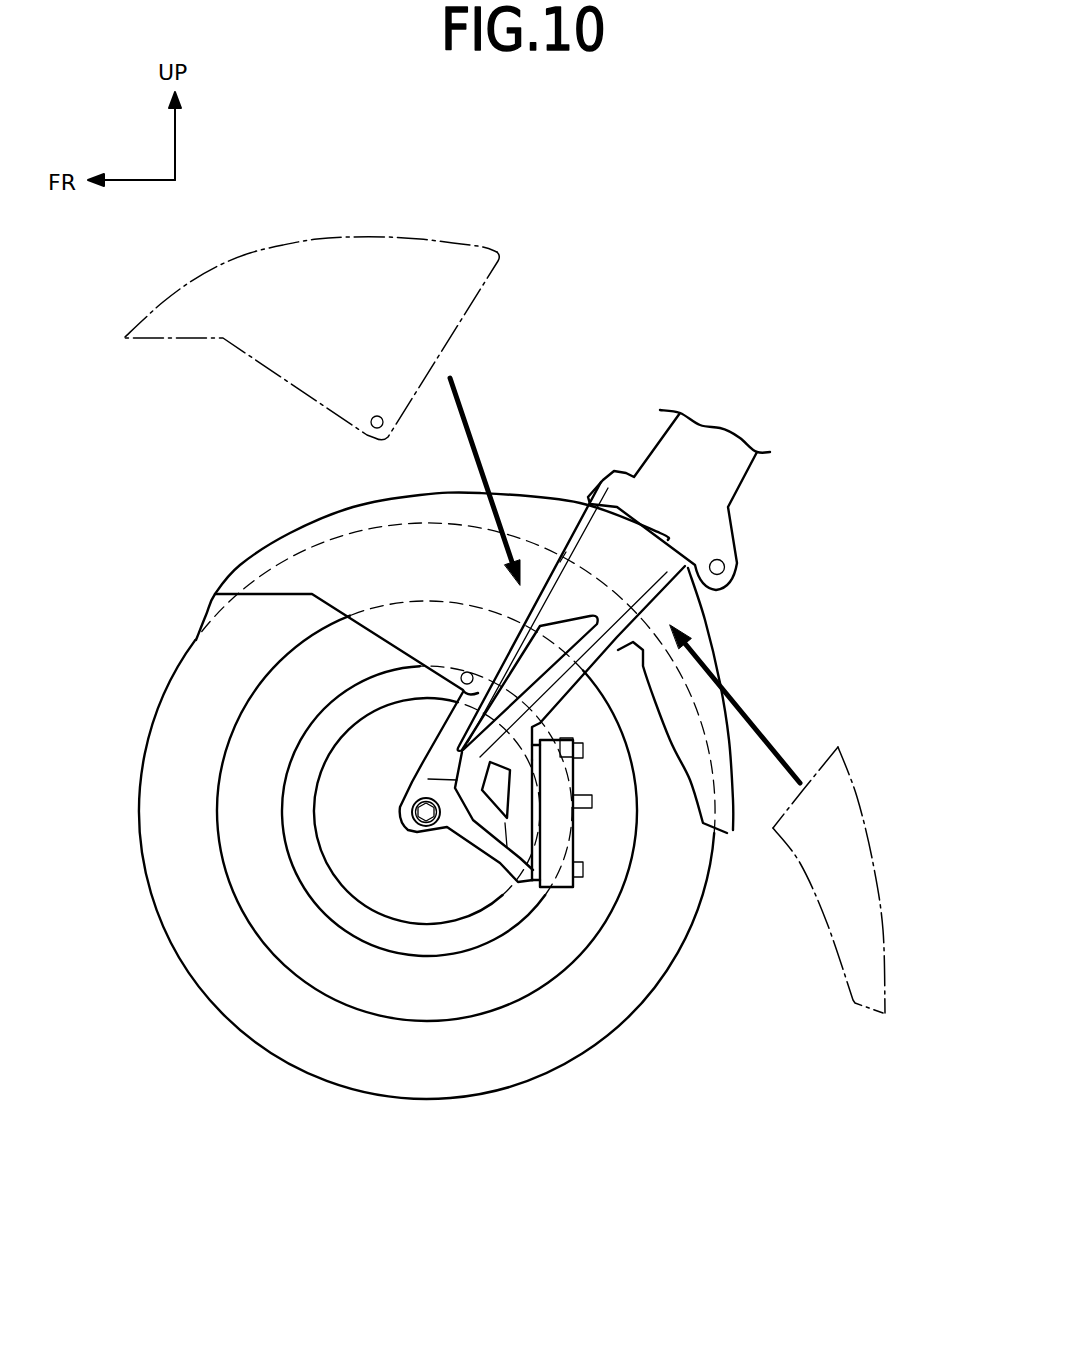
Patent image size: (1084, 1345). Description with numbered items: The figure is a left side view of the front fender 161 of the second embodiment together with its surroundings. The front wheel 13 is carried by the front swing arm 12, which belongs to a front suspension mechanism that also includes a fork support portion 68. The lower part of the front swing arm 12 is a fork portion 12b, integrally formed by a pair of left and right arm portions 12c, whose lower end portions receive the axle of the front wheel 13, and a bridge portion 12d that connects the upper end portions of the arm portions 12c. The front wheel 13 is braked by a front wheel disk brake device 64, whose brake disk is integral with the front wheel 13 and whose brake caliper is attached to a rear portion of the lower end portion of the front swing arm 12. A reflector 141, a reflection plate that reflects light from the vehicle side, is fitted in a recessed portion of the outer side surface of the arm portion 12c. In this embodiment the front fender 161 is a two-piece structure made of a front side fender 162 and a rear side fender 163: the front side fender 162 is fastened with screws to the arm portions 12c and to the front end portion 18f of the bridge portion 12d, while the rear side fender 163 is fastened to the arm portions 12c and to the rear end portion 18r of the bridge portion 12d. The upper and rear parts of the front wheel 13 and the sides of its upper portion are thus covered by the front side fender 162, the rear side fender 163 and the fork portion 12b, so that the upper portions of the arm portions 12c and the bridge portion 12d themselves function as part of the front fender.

The front swing arm 12 is at (602, 479).
The fork portion 12b is at (543, 570).
The arm portions 12c is at (580, 672).
The bridge portion 12d is at (658, 540).
The front wheel 13 is at (252, 1023).
The front end portion 18f is at (558, 555).
The rear end portion 18r is at (660, 613).
The front wheel disk brake device 64 is at (525, 892).
The fork support portion 68 is at (732, 460).
The reflector 141 is at (477, 710).
The front fender 161 is at (345, 493).
The front side fender 162 is at (302, 238).
The rear side fender 163 is at (863, 827).